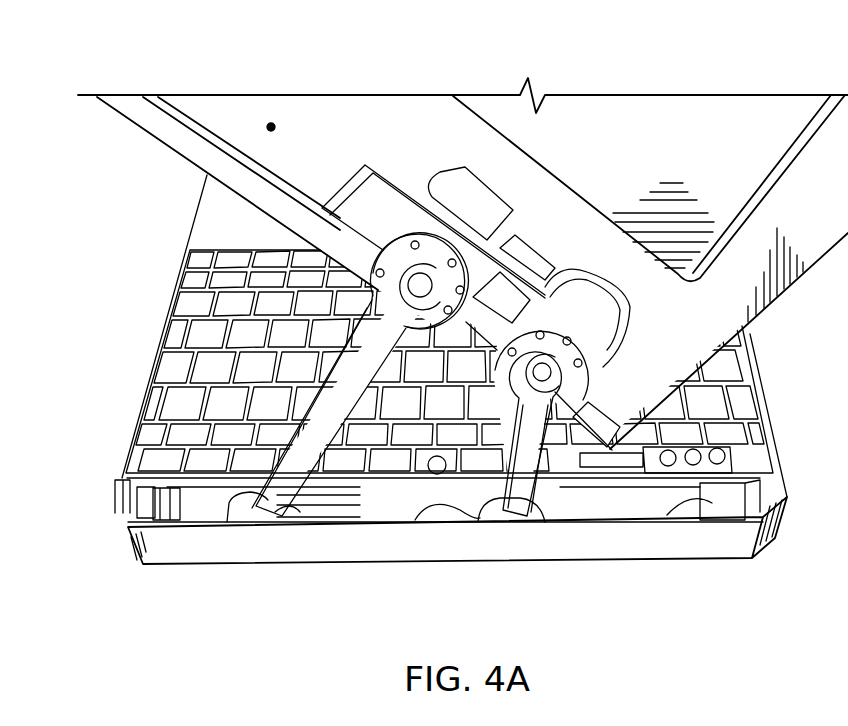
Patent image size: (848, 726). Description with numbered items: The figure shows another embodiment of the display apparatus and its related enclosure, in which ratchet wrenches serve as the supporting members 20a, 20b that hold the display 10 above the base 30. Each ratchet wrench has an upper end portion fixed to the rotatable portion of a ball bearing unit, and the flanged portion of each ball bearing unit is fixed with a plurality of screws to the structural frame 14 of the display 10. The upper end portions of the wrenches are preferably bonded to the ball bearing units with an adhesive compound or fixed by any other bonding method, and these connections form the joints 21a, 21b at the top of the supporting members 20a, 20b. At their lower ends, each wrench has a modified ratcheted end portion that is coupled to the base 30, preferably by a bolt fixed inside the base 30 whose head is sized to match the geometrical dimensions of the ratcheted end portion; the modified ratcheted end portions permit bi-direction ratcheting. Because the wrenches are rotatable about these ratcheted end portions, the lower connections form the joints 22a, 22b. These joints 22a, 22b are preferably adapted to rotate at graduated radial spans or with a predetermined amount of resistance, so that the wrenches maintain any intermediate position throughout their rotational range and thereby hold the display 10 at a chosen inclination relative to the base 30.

The display 10 is at (637, 155).
The structural frame 14 is at (270, 123).
The supporting member 20a is at (355, 374).
The supporting member 20b is at (528, 455).
The joint 21a is at (410, 287).
The joint 21b is at (580, 368).
The joint 22a is at (234, 520).
The joint 22b is at (503, 520).
The base 30 is at (673, 545).